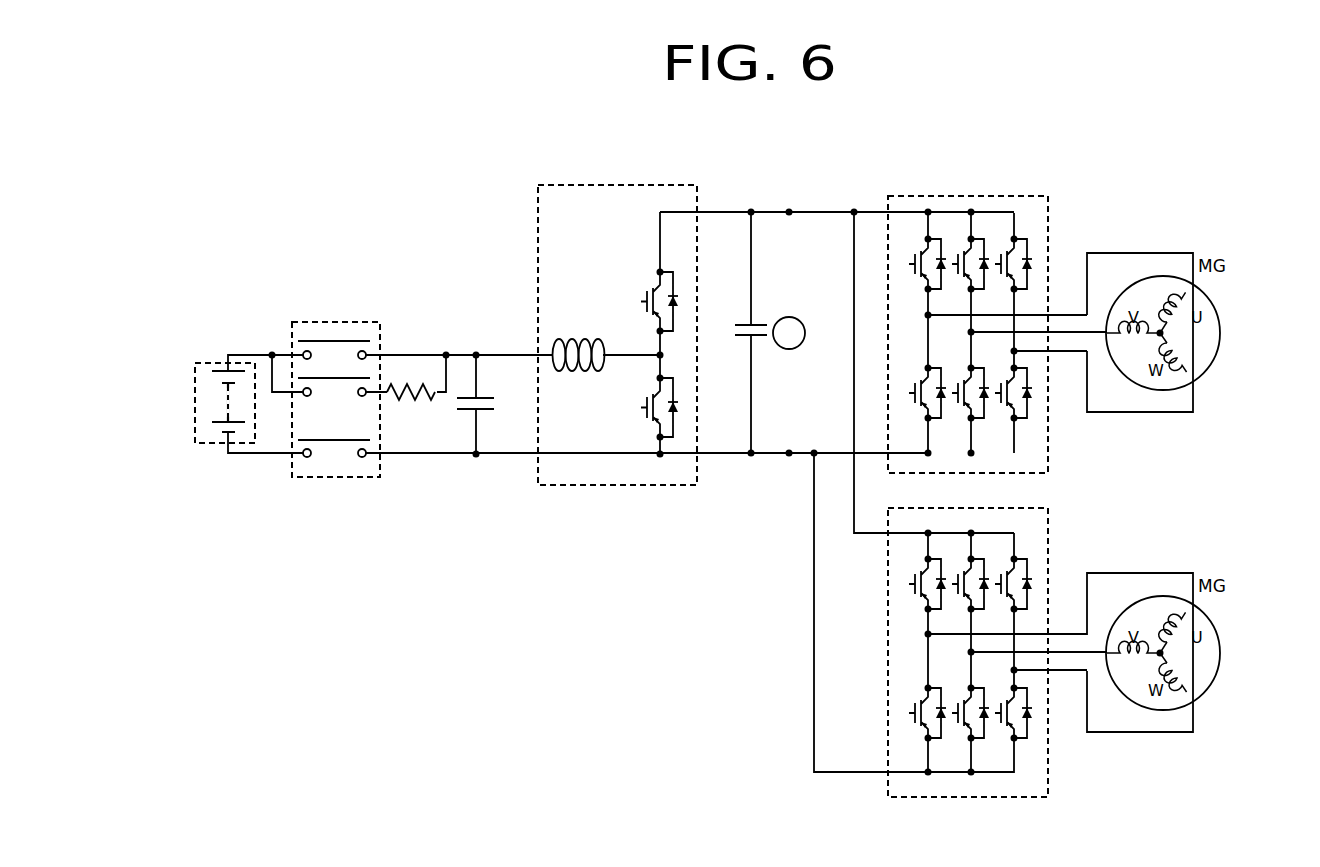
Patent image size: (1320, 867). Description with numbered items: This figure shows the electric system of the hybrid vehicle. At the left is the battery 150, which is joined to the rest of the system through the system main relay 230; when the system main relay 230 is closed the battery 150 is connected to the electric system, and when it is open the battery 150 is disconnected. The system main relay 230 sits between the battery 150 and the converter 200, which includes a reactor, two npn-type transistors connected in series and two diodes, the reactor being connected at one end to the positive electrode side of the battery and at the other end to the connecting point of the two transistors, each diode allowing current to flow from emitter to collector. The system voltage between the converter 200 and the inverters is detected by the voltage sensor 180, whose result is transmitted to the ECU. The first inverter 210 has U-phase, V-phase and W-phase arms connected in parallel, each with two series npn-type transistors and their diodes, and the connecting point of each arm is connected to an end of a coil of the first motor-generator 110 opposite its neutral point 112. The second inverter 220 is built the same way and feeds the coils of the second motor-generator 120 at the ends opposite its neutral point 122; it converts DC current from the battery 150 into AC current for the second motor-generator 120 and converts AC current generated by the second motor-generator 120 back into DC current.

The battery 150 is at (212, 361).
The system main relay 230 is at (333, 322).
The converter 200 is at (678, 185).
The voltage sensor 180 is at (800, 346).
The first inverter 210 is at (1048, 426).
The first motor-generator 110 is at (1207, 366).
The neutral point 112 is at (1160, 333).
The second inverter 220 is at (1048, 746).
The second motor-generator 120 is at (1207, 686).
The neutral point 122 is at (1160, 653).